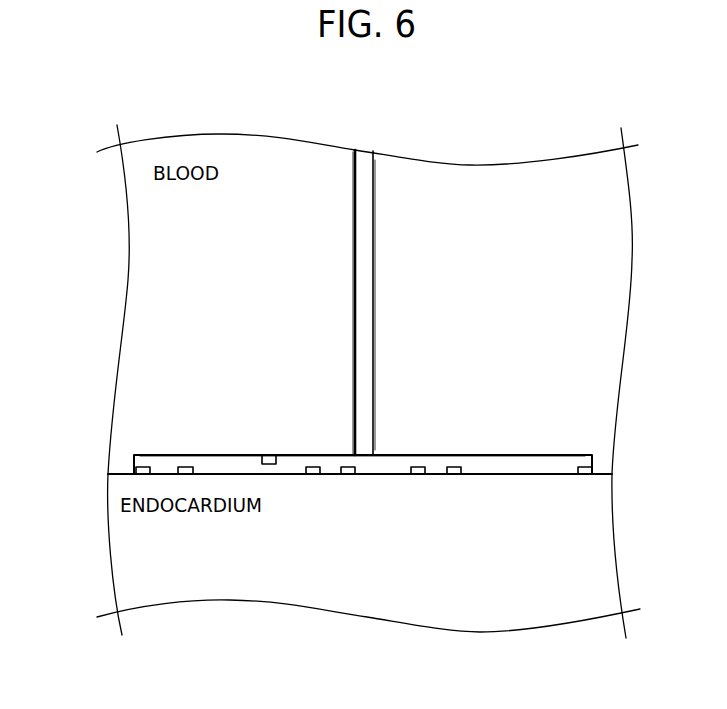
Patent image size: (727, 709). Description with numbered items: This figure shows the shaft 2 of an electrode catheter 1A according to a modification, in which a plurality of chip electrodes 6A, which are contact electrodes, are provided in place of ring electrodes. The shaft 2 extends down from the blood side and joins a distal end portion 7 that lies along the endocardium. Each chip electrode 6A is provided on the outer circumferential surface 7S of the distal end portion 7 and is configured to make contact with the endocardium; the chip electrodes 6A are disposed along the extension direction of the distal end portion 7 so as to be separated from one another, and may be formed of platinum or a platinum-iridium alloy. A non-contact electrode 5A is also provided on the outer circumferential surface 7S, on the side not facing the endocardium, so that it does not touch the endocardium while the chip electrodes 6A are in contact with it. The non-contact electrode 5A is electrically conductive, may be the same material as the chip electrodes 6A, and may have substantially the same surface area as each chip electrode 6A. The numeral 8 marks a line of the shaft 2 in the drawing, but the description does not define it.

The electrode catheter 1A is at (343, 186).
The shaft 8 is at (363, 160).
The shaft 2 is at (390, 363).
The non-contact electrode 5A is at (270, 462).
The outer circumferential surface 7S is at (500, 463).
The distal end portion 7 is at (552, 476).
The chip electrodes 6A is at (347, 476).